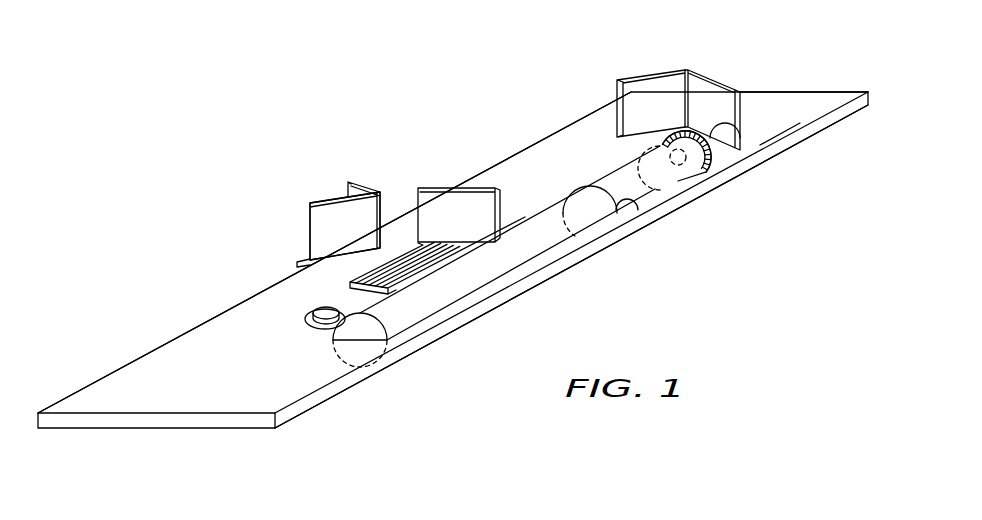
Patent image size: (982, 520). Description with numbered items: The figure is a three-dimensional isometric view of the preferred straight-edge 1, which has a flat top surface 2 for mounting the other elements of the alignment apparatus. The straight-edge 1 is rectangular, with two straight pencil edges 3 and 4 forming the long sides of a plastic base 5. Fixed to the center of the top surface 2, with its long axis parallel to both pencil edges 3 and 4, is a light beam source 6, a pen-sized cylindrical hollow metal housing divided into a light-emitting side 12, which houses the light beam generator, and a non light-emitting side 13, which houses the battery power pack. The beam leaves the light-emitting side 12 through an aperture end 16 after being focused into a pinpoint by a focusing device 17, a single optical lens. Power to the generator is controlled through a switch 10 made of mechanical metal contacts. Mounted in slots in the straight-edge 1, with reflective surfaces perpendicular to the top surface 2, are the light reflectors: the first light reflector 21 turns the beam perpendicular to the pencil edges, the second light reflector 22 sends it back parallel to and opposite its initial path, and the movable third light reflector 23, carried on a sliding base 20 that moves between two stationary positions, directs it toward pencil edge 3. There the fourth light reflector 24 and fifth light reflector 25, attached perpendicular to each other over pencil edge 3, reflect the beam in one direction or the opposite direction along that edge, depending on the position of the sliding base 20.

The straight-edge 1 is at (163, 423).
The flat top surface 2 is at (165, 368).
The pencil edge 3 is at (90, 386).
The pencil edge 4 is at (327, 392).
The plastic base 5 is at (287, 421).
The light beam source 6 is at (638, 203).
The switch 10 is at (312, 308).
The light-emitting side 12 is at (712, 188).
The non light-emitting side 13 is at (433, 298).
The aperture end 16 is at (712, 180).
The focusing device 17 is at (767, 152).
The sliding base 20 is at (385, 265).
The first light reflector 21 is at (748, 100).
The second light reflector 22 is at (648, 68).
The third light reflector 23 is at (440, 188).
The fourth light reflector 24 is at (367, 185).
The fifth light reflector 25 is at (310, 227).